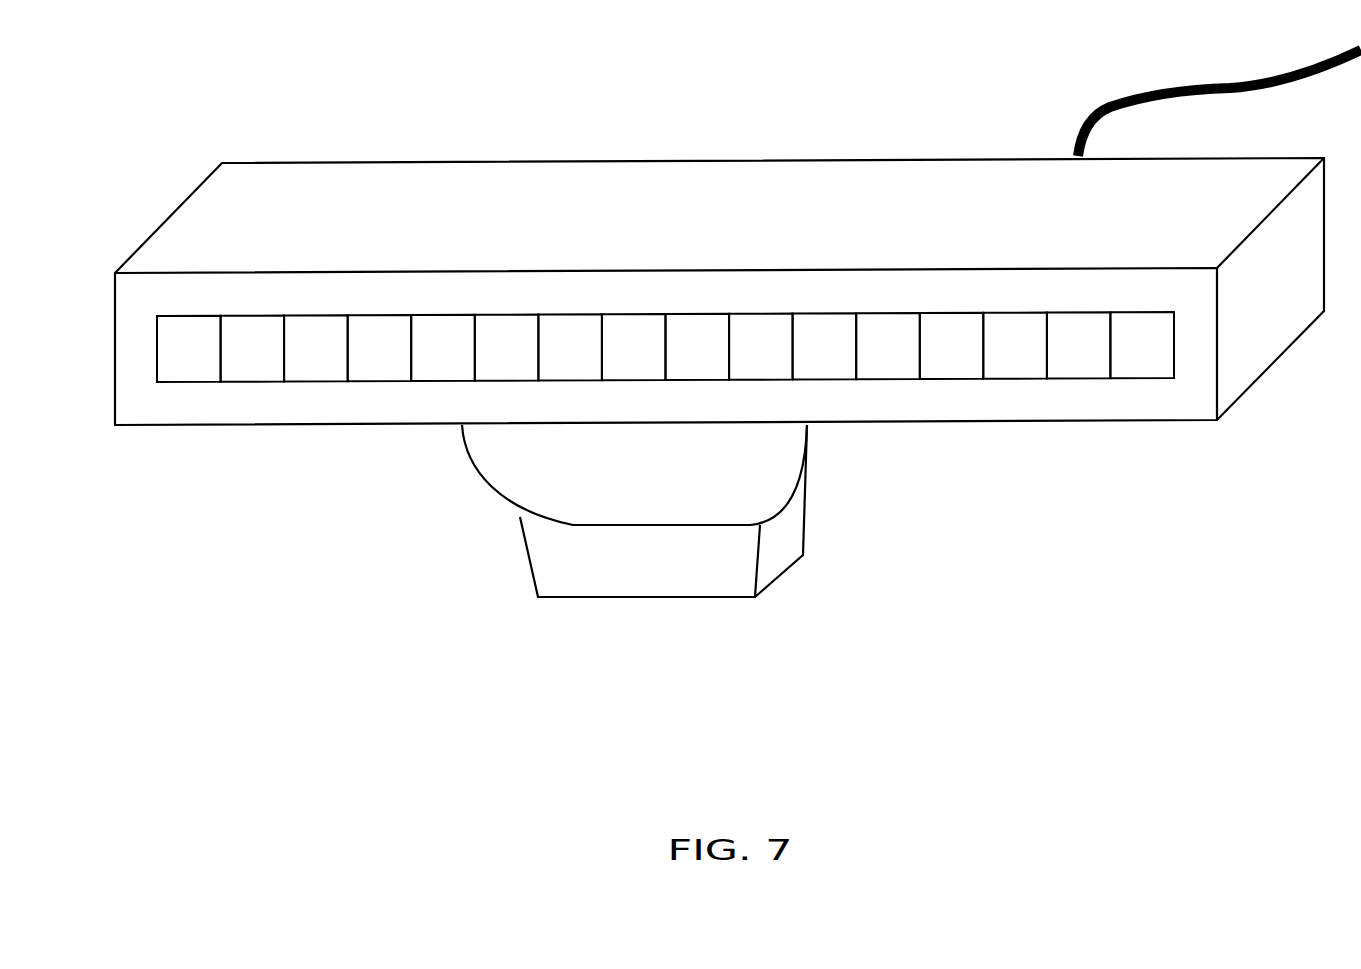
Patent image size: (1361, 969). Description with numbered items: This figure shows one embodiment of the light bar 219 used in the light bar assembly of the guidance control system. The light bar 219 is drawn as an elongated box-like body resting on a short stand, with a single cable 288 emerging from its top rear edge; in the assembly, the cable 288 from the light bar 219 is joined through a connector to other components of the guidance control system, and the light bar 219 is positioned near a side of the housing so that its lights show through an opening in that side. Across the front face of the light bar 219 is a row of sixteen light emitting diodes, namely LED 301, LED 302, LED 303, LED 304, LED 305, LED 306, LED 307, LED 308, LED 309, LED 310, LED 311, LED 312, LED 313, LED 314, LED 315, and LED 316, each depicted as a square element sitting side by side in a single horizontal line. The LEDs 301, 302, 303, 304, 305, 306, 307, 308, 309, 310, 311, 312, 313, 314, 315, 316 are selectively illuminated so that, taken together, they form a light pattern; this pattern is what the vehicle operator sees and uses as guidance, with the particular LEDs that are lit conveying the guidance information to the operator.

The light bar 219 is at (413, 162).
The cable 288 is at (1093, 113).
The LED 301 is at (185, 382).
The LED 302 is at (242, 382).
The LED 303 is at (305, 382).
The LED 304 is at (360, 382).
The LED 305 is at (423, 382).
The LED 306 is at (500, 313).
The LED 307 is at (563, 313).
The LED 308 is at (625, 313).
The LED 309 is at (690, 313).
The LED 310 is at (753, 313).
The LED 311 is at (818, 313).
The LED 312 is at (880, 313).
The LED 313 is at (947, 379).
The LED 314 is at (997, 379).
The LED 315 is at (1072, 379).
The LED 316 is at (1123, 379).